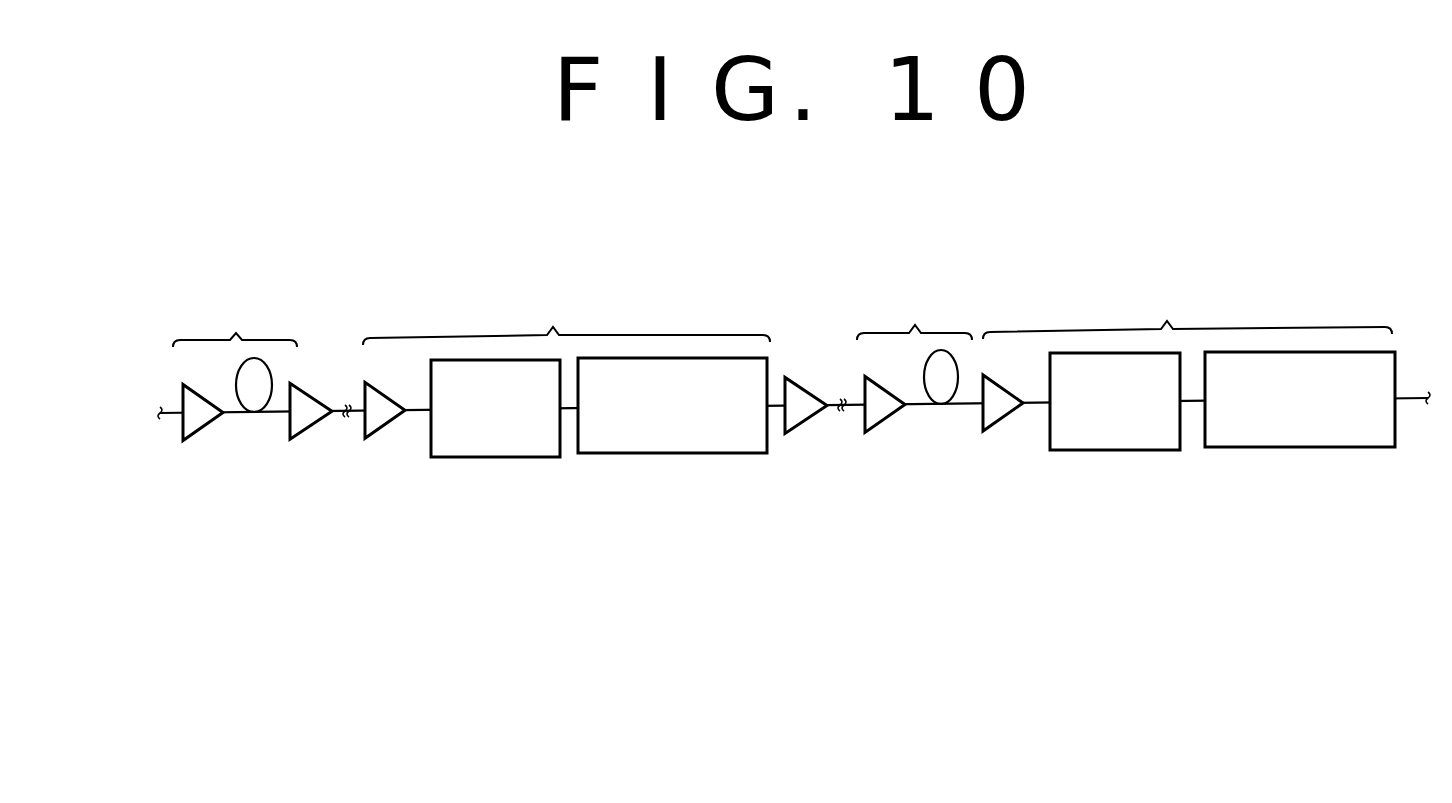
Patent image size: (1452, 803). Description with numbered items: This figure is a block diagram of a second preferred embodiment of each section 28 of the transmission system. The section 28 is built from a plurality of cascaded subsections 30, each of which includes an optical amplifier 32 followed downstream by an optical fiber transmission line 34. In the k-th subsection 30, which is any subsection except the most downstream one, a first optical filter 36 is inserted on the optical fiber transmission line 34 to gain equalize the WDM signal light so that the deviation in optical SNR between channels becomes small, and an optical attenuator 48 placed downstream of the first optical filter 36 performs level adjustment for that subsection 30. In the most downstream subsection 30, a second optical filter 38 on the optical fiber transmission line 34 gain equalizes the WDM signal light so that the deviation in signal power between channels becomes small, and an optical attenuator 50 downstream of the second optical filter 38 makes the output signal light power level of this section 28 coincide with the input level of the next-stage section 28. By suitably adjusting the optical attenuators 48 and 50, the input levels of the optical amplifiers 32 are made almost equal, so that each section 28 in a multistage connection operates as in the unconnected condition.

The section 28 is at (709, 290).
The subsection 30 is at (782, 314).
The optical amplifier 32 is at (193, 441).
The optical fiber transmission line 34 is at (278, 413).
The first optical filter 36 is at (460, 457).
The second optical filter 38 is at (1078, 450).
The optical attenuator 48 is at (648, 453).
The optical attenuator 50 is at (1273, 447).